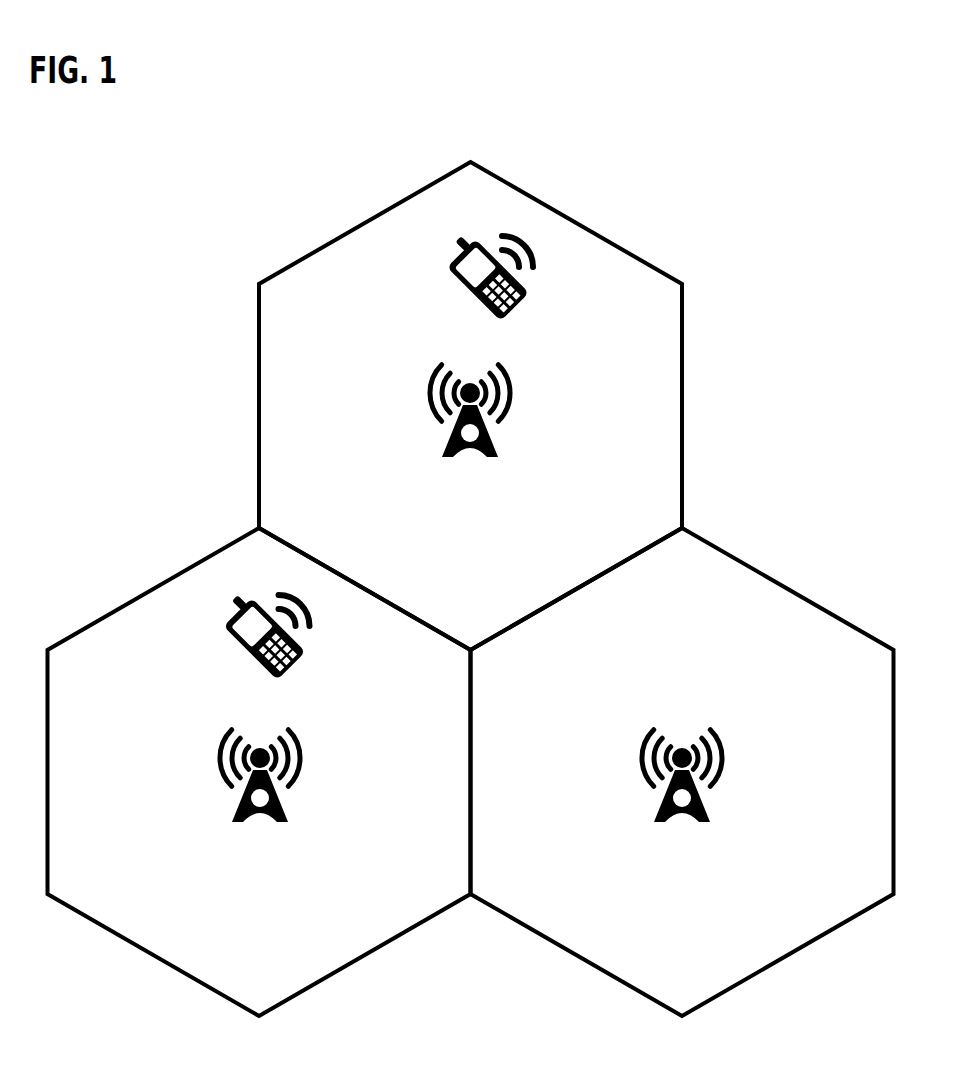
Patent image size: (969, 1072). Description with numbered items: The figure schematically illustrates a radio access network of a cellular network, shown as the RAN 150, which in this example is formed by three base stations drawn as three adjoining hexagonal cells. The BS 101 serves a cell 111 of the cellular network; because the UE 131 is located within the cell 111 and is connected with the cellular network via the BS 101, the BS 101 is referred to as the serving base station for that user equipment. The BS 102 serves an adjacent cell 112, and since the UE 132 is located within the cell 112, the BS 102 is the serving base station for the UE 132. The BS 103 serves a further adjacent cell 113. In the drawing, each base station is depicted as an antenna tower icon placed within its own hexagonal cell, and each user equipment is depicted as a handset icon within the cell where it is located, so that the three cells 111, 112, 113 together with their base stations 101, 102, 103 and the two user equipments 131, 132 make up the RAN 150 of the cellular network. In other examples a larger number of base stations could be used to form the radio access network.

The radio access network 150 is at (750, 135).
The base station 101 is at (233, 813).
The base station 102 is at (442, 438).
The base station 103 is at (655, 813).
The cell 111 is at (210, 988).
The cell 112 is at (259, 498).
The cell 113 is at (633, 988).
The user equipment 131 is at (222, 628).
The user equipment 132 is at (446, 270).